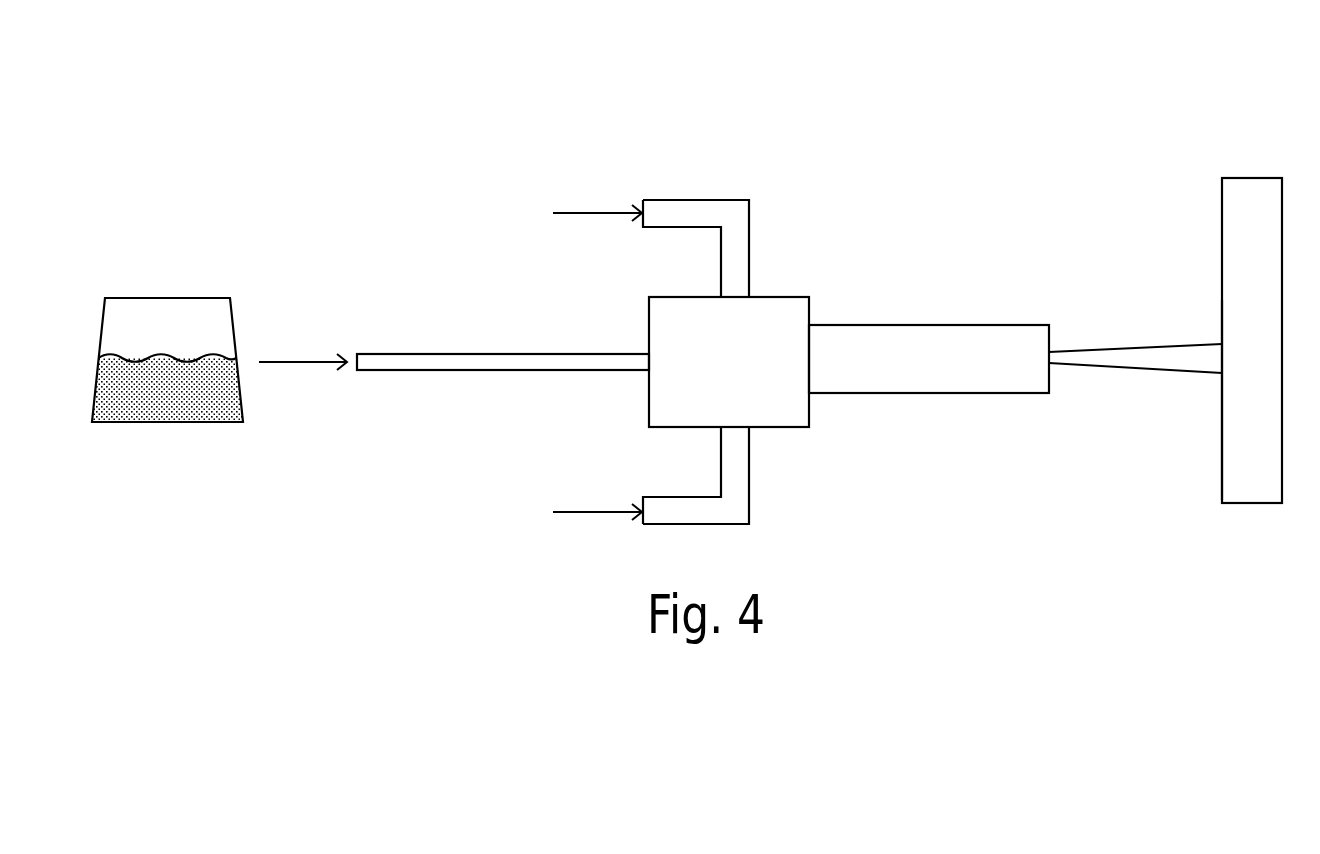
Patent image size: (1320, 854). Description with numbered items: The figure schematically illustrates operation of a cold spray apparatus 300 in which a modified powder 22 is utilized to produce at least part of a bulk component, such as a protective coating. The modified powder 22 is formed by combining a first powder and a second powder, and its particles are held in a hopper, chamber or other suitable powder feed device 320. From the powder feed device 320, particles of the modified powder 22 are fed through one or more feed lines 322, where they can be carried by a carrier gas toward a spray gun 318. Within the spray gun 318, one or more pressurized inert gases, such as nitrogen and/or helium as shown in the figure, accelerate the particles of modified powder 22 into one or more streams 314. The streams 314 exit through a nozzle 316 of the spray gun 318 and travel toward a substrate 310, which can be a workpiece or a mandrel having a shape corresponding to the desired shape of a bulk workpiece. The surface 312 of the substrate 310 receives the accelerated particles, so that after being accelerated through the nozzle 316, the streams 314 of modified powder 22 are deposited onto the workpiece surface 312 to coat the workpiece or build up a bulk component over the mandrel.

The cold spray apparatus 300 is at (932, 150).
The substrate 310 is at (1256, 175).
The surface 312 is at (1222, 466).
The stream 314 is at (1153, 344).
The nozzle 316 is at (1010, 324).
The spray gun 318 is at (790, 292).
The powder feed device 320 is at (182, 293).
The feed line 322 is at (535, 371).
The modified powder 22 is at (167, 423).